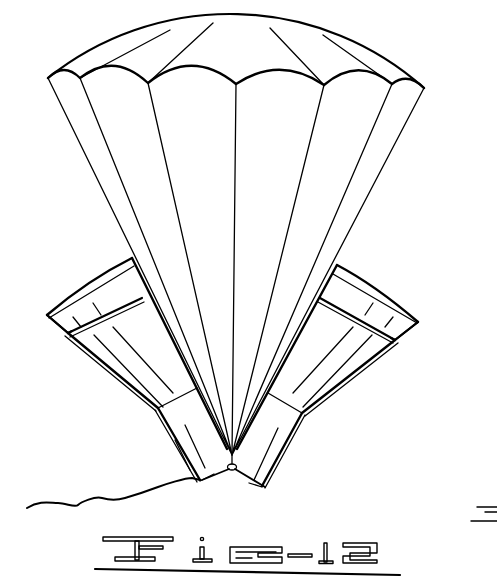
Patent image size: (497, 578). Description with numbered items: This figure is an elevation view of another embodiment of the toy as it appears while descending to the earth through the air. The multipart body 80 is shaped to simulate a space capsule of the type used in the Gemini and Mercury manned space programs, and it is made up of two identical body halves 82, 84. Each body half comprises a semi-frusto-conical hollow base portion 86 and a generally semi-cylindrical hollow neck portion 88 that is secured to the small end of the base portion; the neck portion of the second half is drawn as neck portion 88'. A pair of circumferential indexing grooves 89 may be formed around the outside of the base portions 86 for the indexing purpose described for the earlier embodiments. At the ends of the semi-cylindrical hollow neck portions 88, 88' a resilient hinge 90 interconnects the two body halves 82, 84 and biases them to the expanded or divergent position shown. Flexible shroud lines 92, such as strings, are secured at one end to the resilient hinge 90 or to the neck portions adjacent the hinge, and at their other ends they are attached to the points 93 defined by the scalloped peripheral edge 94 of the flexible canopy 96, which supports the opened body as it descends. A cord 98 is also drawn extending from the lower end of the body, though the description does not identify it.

The multipart body 80 is at (150, 427).
The body half 82 is at (125, 385).
The body half 84 is at (350, 378).
The semi-frusto-conical hollow base portion 86 is at (160, 355).
The semi-cylindrical hollow neck portion 88 is at (184, 435).
The lower wing panel 88' is at (277, 440).
The circumferential indexing grooves 89 is at (66, 334).
The resilient hinge 90 is at (232, 472).
The flexible shroud lines 92 is at (79, 143).
The points 93 is at (238, 83).
The scalloped peripheral edge 94 is at (173, 72).
The flexible canopy 96 is at (236, 82).
The cord 98 is at (75, 502).